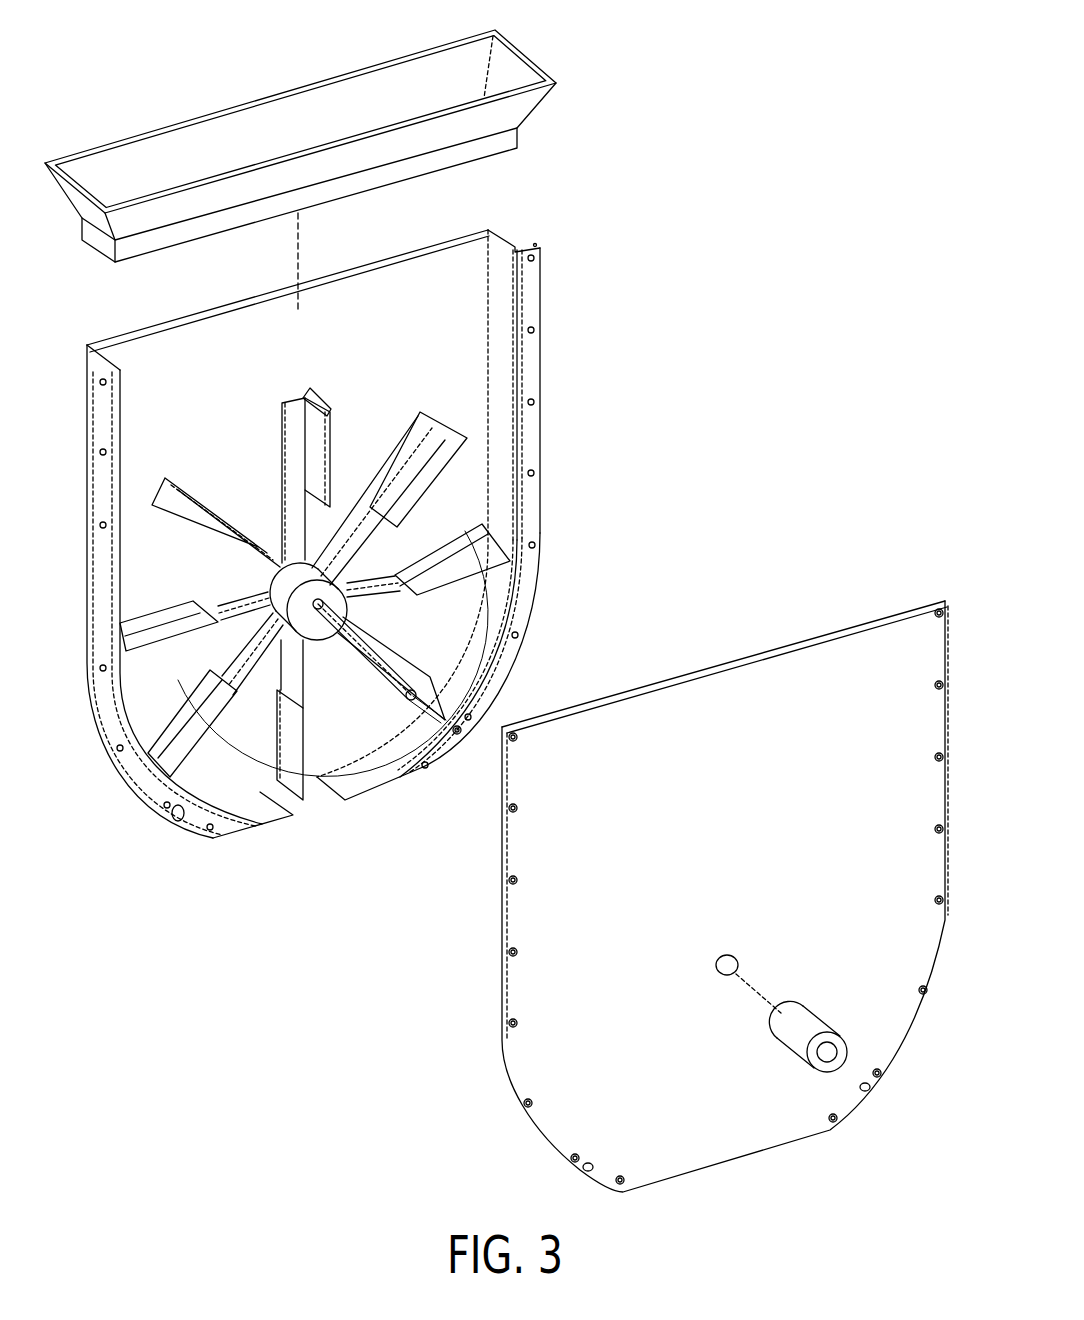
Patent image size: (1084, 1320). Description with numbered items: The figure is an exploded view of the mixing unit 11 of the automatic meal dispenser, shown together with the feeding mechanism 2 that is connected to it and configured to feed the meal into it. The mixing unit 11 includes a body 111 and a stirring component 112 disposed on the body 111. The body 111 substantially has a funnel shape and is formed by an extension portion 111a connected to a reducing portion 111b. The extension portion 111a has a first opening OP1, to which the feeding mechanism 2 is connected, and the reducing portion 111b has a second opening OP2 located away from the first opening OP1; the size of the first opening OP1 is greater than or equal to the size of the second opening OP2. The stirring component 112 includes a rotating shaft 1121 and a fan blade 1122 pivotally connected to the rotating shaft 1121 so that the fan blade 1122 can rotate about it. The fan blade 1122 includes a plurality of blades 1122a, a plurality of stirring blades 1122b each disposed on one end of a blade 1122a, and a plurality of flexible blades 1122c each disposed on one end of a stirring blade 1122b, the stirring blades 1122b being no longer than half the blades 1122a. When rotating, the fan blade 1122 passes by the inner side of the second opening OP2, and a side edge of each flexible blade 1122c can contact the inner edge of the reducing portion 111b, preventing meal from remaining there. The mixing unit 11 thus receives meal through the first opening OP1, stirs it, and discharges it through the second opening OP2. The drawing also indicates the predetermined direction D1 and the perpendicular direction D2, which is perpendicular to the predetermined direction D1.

The feeding mechanism 2 is at (534, 107).
The mixing unit 11 is at (510, 711).
The body 111 is at (516, 522).
The extension portion 111a is at (533, 443).
The reducing portion 111b is at (505, 663).
The stirring component 112 is at (368, 636).
The rotating shaft 1121 is at (295, 625).
The fan blade 1122 is at (371, 614).
The blades 1122a is at (290, 438).
The stirring blades 1122b is at (329, 432).
The flexible blades 1122c is at (318, 402).
The first opening OP1 is at (172, 340).
The second opening OP2 is at (323, 802).
The predetermined direction D1 is at (960, 1160).
The perpendicular direction D2 is at (117, 1060).